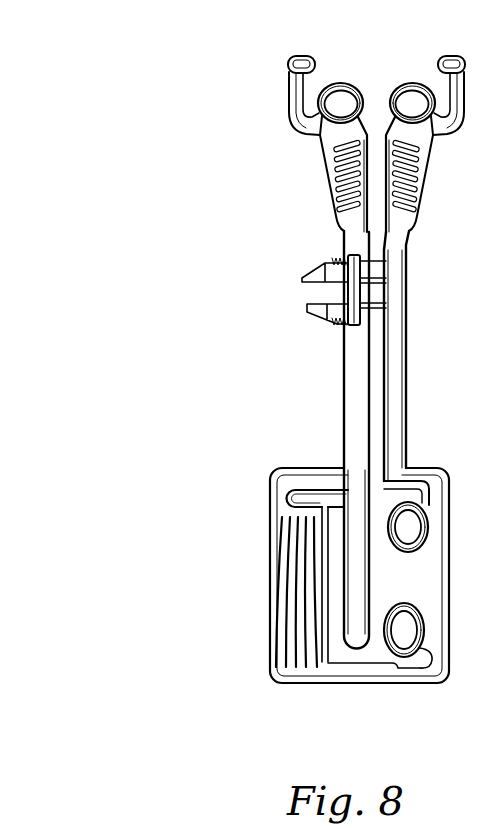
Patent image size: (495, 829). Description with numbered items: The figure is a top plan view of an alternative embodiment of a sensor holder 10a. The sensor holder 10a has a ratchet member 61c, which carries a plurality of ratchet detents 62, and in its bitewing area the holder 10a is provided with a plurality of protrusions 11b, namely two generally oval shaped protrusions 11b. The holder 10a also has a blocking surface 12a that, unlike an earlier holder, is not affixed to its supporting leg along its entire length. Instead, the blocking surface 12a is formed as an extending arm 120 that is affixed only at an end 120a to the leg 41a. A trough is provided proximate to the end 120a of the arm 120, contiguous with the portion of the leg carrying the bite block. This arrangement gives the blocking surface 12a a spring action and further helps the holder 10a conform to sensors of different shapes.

The sensor holder 10a is at (181, 343).
The ratchet member 61c is at (310, 272).
The lower clamp jaw 62 is at (340, 327).
The leg 41a is at (360, 413).
The end 120a is at (357, 483).
The extending arm 120 is at (355, 540).
The blocking surface 12a is at (353, 592).
The protrusions 11b is at (430, 541).